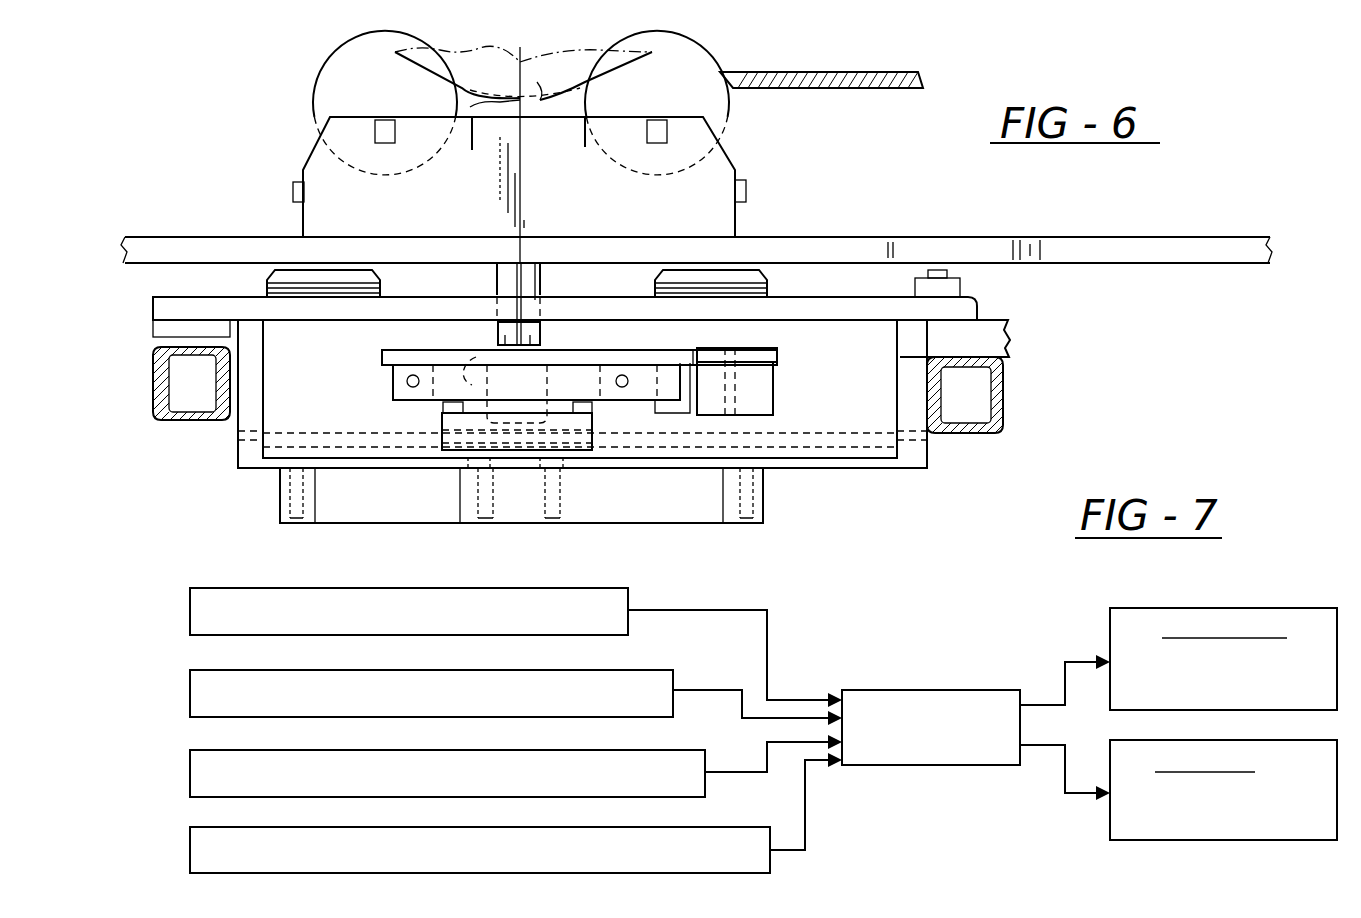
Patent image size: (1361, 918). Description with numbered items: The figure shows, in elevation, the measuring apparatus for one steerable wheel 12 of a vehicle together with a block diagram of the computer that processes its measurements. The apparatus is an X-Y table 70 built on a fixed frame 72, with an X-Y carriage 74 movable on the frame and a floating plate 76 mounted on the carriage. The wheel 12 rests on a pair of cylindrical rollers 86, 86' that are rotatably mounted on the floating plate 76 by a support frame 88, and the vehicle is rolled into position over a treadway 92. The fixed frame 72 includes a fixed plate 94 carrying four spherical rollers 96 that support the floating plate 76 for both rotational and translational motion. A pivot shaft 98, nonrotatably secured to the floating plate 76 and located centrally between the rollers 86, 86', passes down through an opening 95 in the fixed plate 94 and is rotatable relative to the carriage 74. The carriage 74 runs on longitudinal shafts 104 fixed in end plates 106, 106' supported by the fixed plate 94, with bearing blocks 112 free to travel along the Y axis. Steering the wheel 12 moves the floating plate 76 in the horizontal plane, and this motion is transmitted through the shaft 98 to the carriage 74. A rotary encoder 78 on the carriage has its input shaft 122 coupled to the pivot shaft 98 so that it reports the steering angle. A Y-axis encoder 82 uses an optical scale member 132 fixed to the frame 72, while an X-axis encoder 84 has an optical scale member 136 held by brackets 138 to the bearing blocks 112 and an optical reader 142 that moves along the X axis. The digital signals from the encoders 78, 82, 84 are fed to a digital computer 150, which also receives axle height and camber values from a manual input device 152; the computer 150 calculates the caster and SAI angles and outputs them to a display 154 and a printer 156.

In FIG. 6, the steerable wheel 12 is at (523, 154).
In FIG. 6, the X-Y table 70 is at (822, 175).
In FIG. 6, the fixed frame 72 is at (1025, 314).
In FIG. 6, the X-Y carriage 74 is at (392, 337).
In FIG. 6, the floating plate 76 is at (1072, 234).
In FIG. 6, the rotary encoder 78 is at (472, 358).
In FIG. 7, the rotary encoder 78 is at (618, 588).
In FIG. 6, the Y-axis encoder 82 is at (448, 496).
In FIG. 7, the Y-axis encoder 82 is at (663, 750).
In FIG. 6, the X-axis encoder 84 is at (686, 428).
In FIG. 7, the X-axis encoder 84 is at (658, 670).
In FIG. 6, the cylindrical roller 86 is at (350, 103).
In FIG. 6, the cylindrical roller 86' is at (692, 103).
In FIG. 6, the support frame 88 is at (733, 167).
In FIG. 6, the treadway 92 is at (920, 78).
In FIG. 6, the fixed plate 94 is at (826, 297).
In FIG. 6, the opening 95 is at (385, 312).
In FIG. 6, the spherical roller 96 is at (310, 266).
In FIG. 6, the pivot shaft 98 is at (543, 333).
In FIG. 6, the longitudinal shaft 104 is at (320, 438).
In FIG. 6, the end plate 106 is at (188, 416).
In FIG. 6, the end plate 106' is at (965, 426).
In FIG. 6, the bearing block 112 is at (590, 436).
In FIG. 6, the input shaft 122 is at (520, 358).
In FIG. 6, the optical scale member 132 is at (390, 524).
In FIG. 6, the optical scale member 136 is at (762, 385).
In FIG. 6, the bracket 138 is at (757, 350).
In FIG. 6, the optical reader 142 is at (672, 410).
In FIG. 7, the digital computer 150 is at (925, 690).
In FIG. 7, the manual input device 152 is at (713, 827).
In FIG. 7, the display 154 is at (1218, 608).
In FIG. 7, the printer 156 is at (1110, 822).